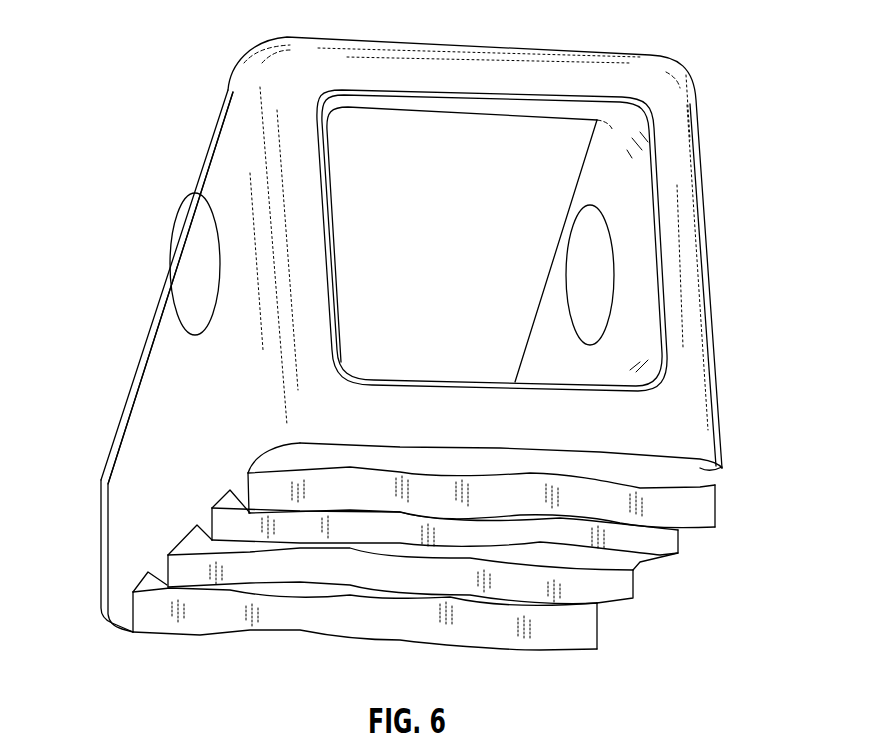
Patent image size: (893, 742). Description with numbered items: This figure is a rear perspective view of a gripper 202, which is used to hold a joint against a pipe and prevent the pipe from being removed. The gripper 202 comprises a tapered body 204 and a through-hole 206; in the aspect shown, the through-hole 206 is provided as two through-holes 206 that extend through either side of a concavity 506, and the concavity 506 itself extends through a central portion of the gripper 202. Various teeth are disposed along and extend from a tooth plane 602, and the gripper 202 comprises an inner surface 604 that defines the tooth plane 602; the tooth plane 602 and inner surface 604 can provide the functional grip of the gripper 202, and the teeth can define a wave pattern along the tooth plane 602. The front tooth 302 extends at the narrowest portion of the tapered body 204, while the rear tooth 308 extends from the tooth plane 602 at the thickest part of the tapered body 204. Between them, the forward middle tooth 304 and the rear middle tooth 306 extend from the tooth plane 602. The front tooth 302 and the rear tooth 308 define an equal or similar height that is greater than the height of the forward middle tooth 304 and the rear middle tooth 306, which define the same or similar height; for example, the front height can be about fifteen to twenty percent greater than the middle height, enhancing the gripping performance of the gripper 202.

The gripper 202 is at (107, 100).
The tapered body 204 is at (140, 357).
The through-hole 206 is at (190, 258).
The front tooth 302 is at (156, 627).
The forward middle tooth 304 is at (622, 587).
The rear middle tooth 306 is at (196, 527).
The rear tooth 308 is at (707, 504).
The concavity 506 is at (489, 150).
The tooth plane 602 is at (722, 470).
The inner surface 604 is at (522, 664).